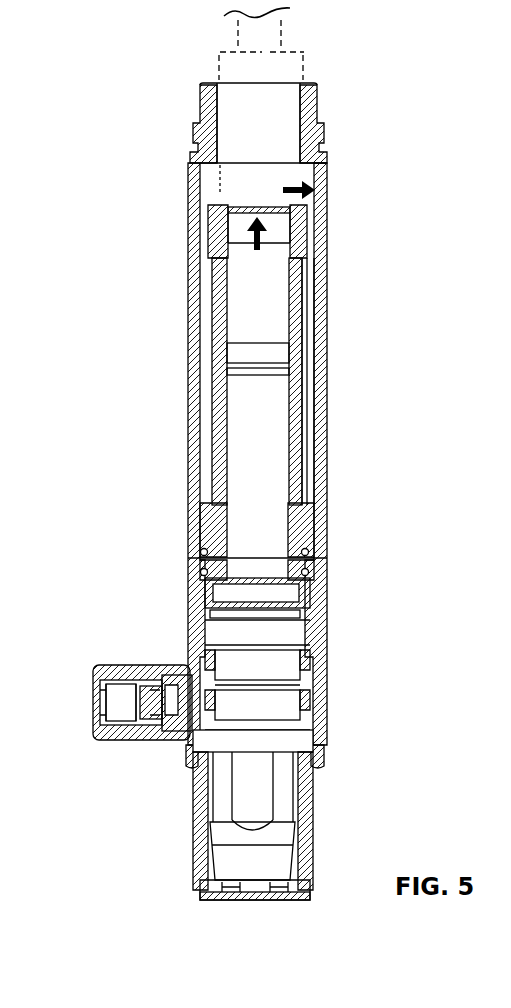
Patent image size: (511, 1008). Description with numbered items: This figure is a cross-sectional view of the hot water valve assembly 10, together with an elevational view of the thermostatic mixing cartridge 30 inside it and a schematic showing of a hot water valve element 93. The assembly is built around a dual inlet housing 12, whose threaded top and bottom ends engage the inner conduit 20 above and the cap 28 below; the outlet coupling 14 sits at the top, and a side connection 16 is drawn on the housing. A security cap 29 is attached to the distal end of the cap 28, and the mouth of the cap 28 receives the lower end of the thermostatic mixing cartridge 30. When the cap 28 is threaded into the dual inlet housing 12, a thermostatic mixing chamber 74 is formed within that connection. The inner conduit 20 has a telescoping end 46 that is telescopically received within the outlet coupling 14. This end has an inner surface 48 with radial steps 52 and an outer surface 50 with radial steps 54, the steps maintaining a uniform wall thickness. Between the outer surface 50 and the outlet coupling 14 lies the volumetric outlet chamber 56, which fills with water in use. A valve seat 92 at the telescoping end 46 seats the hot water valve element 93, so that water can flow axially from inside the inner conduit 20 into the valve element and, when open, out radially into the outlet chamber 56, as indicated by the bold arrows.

The hot water valve assembly 10 is at (97, 118).
The dual inlet housing 12 is at (313, 690).
The outlet coupling 14 is at (190, 420).
The side port / connection 16 is at (93, 705).
The inner conduit 20 is at (190, 565).
The cap 28 is at (310, 870).
The security cap 29 is at (218, 895).
The thermostatic mixing cartridge 30 is at (245, 790).
The telescoping end 46 is at (217, 310).
The inner surface 48 is at (304, 478).
The outer surface 50 is at (304, 438).
The radial steps 52 is at (268, 350).
The radial steps 54 is at (318, 252).
The outlet chamber 56 is at (306, 303).
The thermostatic mixing chamber 74 is at (312, 790).
The valve seat 92 is at (222, 196).
The hot water valve element 93 is at (322, 118).